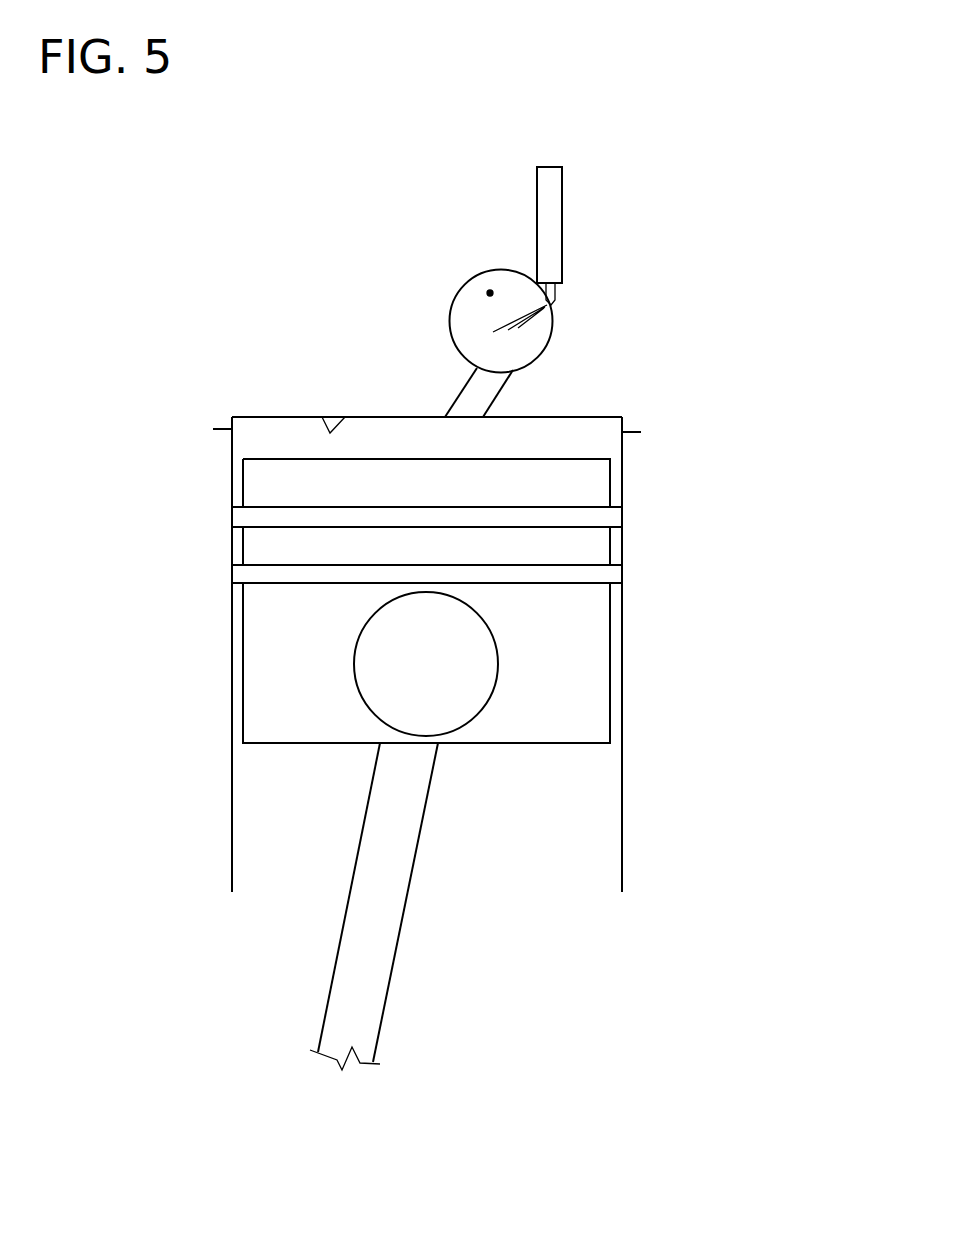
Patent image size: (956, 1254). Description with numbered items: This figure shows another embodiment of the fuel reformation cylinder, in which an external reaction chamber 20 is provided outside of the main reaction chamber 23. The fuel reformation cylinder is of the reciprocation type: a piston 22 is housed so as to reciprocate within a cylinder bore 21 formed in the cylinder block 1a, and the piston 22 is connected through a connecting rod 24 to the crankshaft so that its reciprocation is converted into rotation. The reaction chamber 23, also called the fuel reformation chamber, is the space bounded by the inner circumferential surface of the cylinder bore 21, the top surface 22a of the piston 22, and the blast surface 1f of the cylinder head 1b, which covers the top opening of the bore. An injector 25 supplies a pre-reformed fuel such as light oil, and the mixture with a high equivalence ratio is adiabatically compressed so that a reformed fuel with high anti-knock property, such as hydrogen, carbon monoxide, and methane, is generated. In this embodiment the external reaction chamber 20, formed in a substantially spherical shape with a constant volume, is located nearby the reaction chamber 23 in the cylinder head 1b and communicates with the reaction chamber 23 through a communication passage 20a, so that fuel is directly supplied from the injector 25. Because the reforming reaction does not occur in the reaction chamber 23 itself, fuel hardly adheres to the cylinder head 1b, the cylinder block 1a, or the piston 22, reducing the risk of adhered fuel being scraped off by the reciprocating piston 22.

The cylinder block 1a is at (637, 436).
The cylinder head 1b is at (633, 428).
The blast surface 1f is at (328, 430).
The external reaction chamber 20 is at (488, 292).
The communication passage 20a is at (462, 388).
The cylinder bore 21 is at (617, 478).
The piston 22 is at (311, 745).
The top surface of the piston 22a is at (283, 458).
The reaction chamber 23 is at (426, 436).
The connecting rod 24 is at (383, 900).
The injector 25 is at (550, 203).